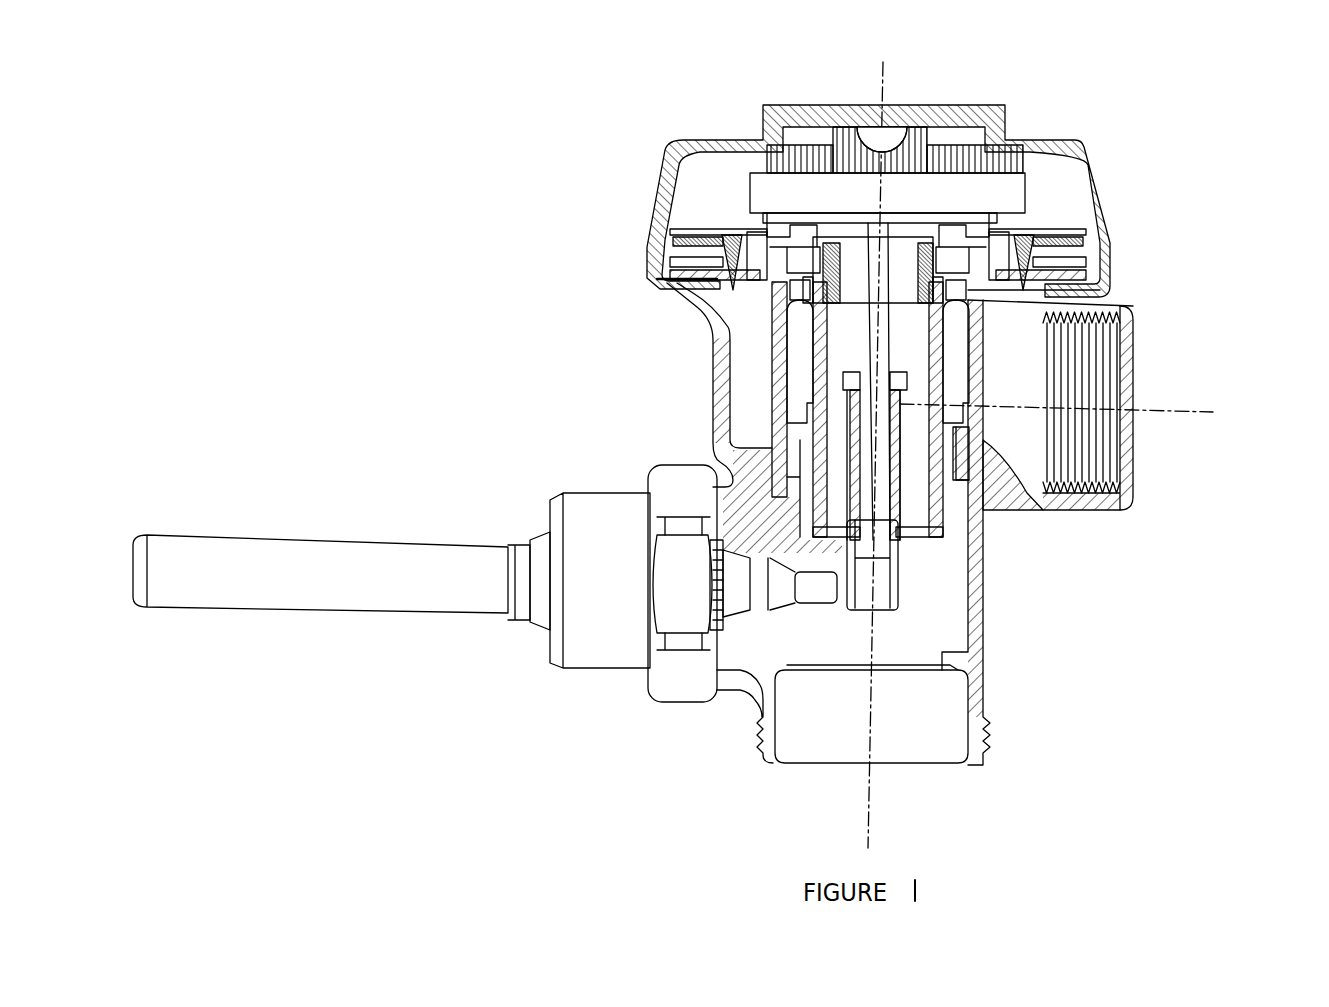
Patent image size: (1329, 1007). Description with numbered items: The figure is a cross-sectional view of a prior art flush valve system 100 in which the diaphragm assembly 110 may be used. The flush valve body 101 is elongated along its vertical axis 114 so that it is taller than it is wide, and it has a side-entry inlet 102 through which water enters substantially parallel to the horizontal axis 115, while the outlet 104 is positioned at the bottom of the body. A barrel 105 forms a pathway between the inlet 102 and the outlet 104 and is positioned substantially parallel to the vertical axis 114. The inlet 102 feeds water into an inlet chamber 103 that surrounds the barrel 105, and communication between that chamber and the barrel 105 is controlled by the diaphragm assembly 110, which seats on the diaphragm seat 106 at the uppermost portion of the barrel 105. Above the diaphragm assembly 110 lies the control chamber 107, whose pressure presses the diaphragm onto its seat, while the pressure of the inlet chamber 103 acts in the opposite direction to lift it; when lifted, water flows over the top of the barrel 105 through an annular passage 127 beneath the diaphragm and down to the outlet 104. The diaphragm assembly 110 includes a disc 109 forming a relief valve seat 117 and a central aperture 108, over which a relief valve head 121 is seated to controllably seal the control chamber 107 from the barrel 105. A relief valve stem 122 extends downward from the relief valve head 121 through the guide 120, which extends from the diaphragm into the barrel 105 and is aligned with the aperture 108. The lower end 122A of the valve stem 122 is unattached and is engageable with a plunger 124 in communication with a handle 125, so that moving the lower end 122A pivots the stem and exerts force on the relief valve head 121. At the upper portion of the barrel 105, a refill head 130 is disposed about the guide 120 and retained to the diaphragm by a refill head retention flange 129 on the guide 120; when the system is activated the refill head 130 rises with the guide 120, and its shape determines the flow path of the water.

The flush valve system 100 is at (886, 14).
The flush valve body 101 is at (725, 140).
The inlet 102 is at (1123, 380).
The inlet chamber 103 is at (752, 380).
The outlet 104 is at (832, 733).
The barrel 105 is at (777, 343).
The diaphragm seat 106 is at (667, 280).
The control chamber 107 is at (773, 193).
The central aperture 108 is at (790, 292).
The disc 109 is at (680, 220).
The diaphragm assembly 110 is at (653, 243).
The vertical axis 114 is at (885, 80).
The horizontal axis 115 is at (1190, 412).
The relief valve seat 117 is at (1000, 225).
The guide 120 is at (1033, 510).
The relief valve head 121 is at (900, 218).
The relief valve stem 122 is at (905, 515).
The lower end of valve stem 122A is at (898, 597).
The plunger 124 is at (818, 587).
The handle 125 is at (297, 573).
The annular passage 127 is at (1067, 263).
The refill head retention flange 129 is at (1010, 295).
The refill head 130 is at (1095, 283).